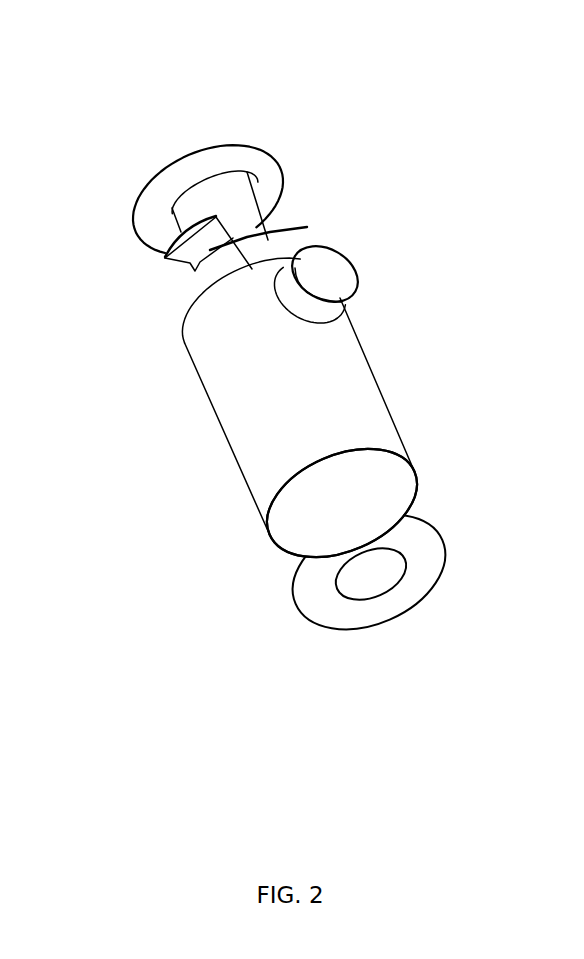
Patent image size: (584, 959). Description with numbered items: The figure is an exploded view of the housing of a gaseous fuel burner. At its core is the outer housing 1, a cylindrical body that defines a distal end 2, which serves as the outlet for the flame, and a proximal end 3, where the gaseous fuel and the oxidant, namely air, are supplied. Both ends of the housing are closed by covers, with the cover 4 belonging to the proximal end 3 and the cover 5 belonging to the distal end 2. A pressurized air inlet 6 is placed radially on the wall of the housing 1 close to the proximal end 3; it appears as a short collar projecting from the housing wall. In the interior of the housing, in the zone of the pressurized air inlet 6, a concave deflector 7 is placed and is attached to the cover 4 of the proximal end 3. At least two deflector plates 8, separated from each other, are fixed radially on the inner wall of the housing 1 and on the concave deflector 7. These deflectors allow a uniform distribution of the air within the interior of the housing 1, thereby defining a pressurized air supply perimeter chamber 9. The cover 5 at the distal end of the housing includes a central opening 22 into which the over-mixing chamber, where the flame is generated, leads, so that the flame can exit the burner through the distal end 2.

The outer housing 1 is at (460, 377).
The distal end 2 is at (234, 676).
The proximal end 3 is at (188, 300).
The cover 4 is at (187, 163).
The cover 5 is at (505, 597).
The pressurized air inlet 6 is at (427, 212).
The concave deflector 7 is at (347, 58).
The deflector plates 8 is at (405, 133).
The pressurized air supply perimeter chamber 9 is at (482, 500).
The central opening 22 is at (320, 722).